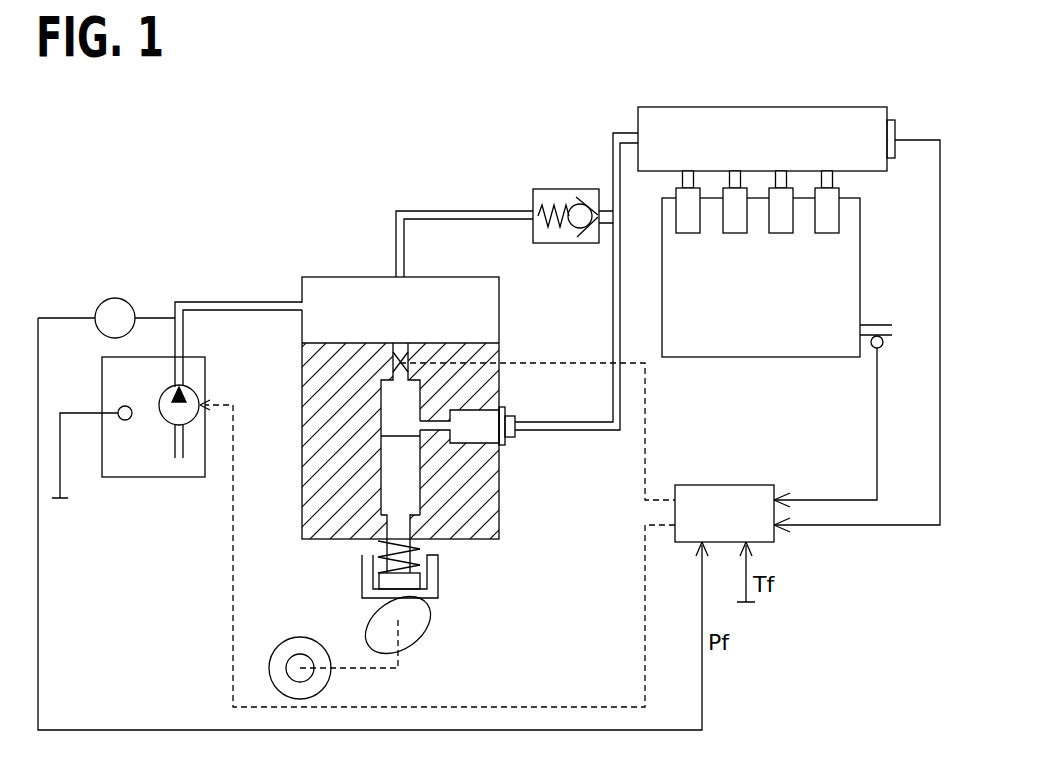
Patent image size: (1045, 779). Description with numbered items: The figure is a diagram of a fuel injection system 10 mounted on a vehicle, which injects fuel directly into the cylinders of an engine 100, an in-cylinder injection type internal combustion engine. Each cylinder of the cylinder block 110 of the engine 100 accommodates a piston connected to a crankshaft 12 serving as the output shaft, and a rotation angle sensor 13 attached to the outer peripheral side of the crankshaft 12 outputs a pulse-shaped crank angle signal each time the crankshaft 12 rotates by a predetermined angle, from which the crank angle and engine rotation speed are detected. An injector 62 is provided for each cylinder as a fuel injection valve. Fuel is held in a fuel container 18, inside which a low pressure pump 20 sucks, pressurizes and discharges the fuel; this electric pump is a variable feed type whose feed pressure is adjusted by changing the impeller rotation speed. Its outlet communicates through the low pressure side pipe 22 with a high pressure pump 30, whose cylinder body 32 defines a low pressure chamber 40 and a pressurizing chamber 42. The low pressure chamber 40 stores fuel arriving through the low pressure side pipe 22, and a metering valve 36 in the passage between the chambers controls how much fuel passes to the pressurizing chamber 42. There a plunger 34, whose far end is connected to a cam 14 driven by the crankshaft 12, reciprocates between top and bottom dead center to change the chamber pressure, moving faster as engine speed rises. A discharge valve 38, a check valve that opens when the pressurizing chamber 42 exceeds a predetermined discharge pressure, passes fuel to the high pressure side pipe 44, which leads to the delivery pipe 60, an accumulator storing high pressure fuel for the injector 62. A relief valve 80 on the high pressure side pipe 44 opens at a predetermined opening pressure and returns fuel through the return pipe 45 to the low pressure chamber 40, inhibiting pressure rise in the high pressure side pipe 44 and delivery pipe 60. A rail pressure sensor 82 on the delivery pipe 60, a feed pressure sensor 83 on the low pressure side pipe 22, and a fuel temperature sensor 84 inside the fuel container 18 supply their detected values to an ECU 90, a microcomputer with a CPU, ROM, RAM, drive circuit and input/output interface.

The fuel injection system 10 is at (653, 83).
The crankshaft 12 is at (283, 642).
The rotation angle sensor 13 is at (883, 347).
The cam 14 is at (440, 621).
The fuel container 18 is at (142, 477).
The low pressure pump 20 is at (160, 398).
The low pressure side pipe 22 is at (220, 302).
The high pressure pump 30 is at (398, 404).
The cylinder body 32 is at (502, 306).
The plunger 34 is at (388, 476).
The metering valve 36 is at (386, 350).
The discharge valve 38 is at (512, 445).
The low pressure chamber 40 is at (333, 289).
The pressurizing chamber 42 is at (383, 418).
The high pressure side pipe 44 is at (613, 329).
The return pipe 45 is at (432, 211).
The delivery pipe 60 is at (838, 107).
The injector 62 is at (793, 220).
The relief valve 80 is at (556, 189).
The rail pressure sensor 82 is at (889, 120).
The feed pressure sensor 83 is at (112, 298).
The fuel temperature sensor 84 is at (118, 410).
The ECU 90 is at (750, 486).
The engine 100 is at (761, 298).
The cylinder block 110 is at (690, 357).